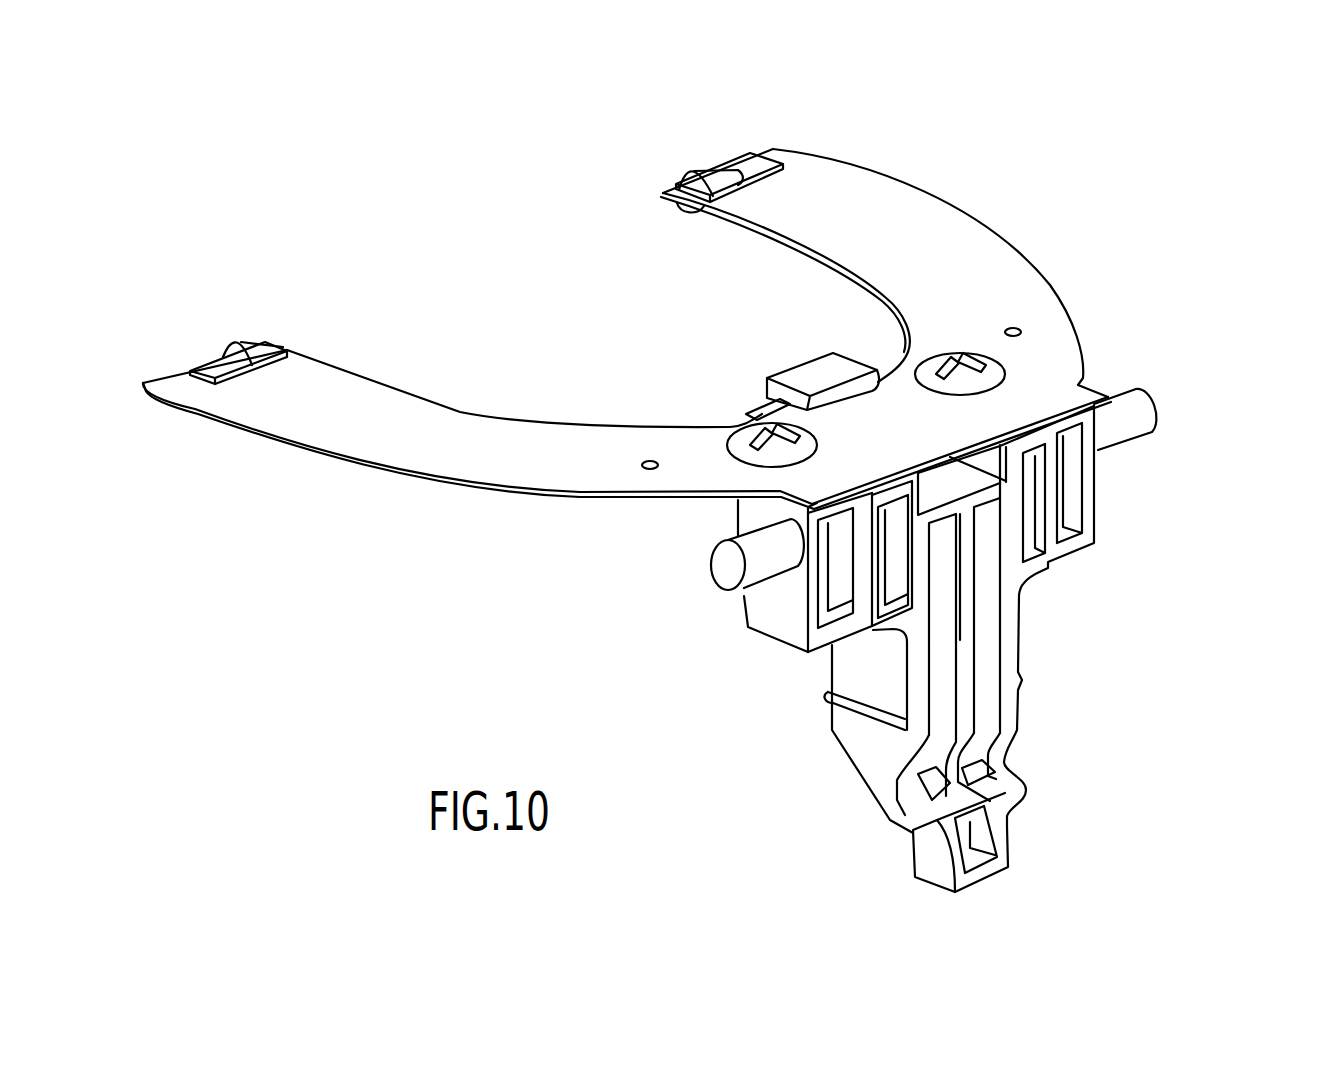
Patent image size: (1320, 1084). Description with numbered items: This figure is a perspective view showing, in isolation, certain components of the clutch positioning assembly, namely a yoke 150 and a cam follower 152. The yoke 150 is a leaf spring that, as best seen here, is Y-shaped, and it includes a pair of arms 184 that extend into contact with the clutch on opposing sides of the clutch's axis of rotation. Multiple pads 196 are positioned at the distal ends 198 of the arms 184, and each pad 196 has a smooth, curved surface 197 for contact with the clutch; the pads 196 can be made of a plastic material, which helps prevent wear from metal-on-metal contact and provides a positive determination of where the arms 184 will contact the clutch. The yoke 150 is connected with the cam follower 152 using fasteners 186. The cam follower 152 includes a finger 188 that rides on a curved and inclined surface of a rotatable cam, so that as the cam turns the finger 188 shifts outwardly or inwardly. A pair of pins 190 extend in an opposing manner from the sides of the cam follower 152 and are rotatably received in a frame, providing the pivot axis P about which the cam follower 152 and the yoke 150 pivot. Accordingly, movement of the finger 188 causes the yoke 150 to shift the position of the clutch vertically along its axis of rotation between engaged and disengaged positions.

The yoke 150 is at (556, 460).
The cam follower 152 is at (988, 646).
The arms 184 is at (927, 222).
The fasteners 186 is at (958, 352).
The finger 188 is at (933, 857).
The pins 190 is at (1130, 403).
The pads 196 is at (712, 178).
The curved surface 197 is at (688, 170).
The distal ends 198 is at (778, 146).